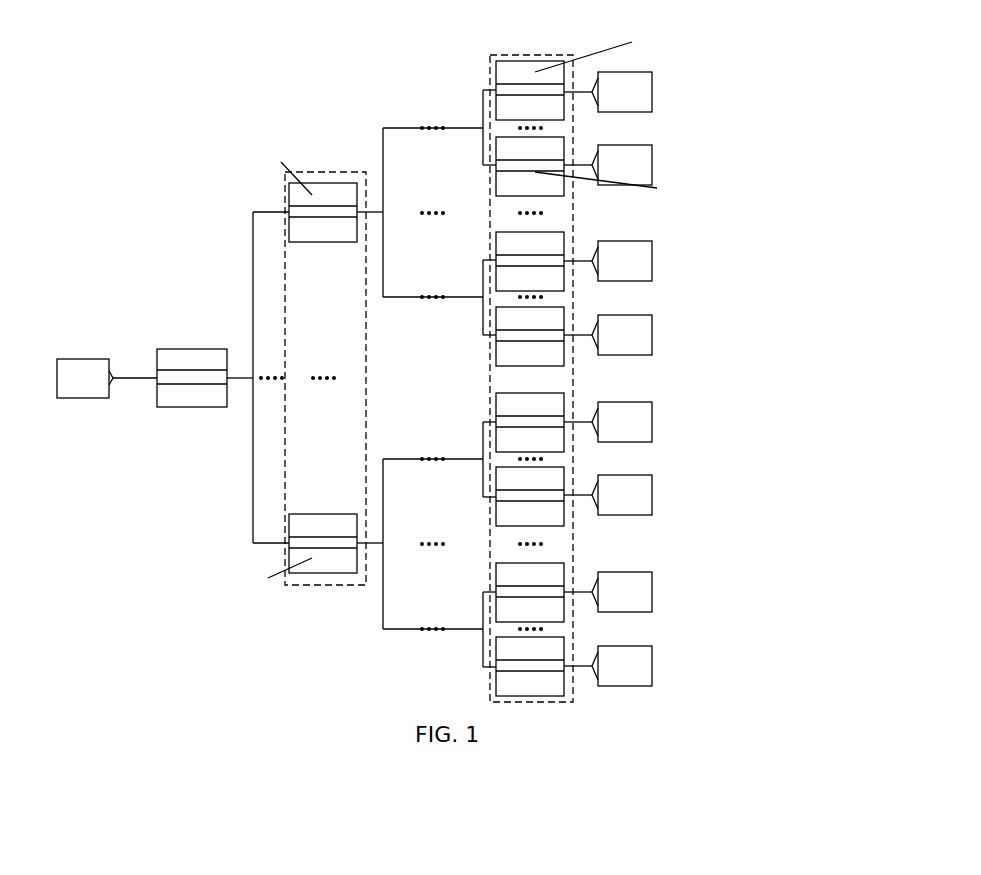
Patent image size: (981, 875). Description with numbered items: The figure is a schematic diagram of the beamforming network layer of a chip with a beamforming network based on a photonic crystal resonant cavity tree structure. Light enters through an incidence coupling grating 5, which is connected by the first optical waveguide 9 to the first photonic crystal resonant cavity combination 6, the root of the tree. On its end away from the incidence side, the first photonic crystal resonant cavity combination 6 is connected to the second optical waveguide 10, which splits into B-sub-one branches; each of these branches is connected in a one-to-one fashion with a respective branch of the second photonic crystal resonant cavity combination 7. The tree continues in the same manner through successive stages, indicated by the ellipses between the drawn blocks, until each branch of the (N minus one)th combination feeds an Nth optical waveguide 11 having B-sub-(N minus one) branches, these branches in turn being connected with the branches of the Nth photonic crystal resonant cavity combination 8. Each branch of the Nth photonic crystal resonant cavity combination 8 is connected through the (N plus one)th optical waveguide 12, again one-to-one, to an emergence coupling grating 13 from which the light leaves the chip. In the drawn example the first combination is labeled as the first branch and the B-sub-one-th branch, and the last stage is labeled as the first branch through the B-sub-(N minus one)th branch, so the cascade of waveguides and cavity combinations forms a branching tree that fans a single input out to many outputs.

The incidence coupling grating 5 is at (77, 374).
The first photonic crystal resonant cavity combination 6 is at (190, 344).
The second photonic crystal resonant cavity combination 7 is at (303, 257).
The Nth photonic crystal resonant cavity combination 8 is at (490, 77).
The first optical waveguide 9 is at (128, 377).
The second optical waveguide 10 is at (252, 298).
The Nth optical waveguide 11 is at (452, 125).
The (N+1)th optical waveguide 12 is at (590, 94).
The emergence coupling grating 13 is at (620, 260).